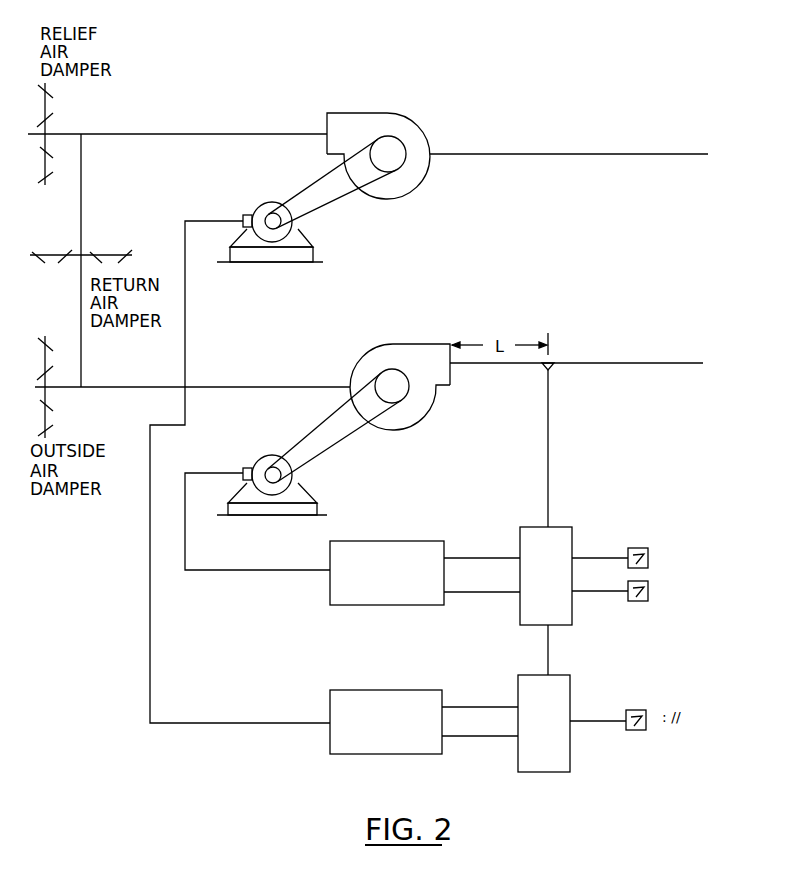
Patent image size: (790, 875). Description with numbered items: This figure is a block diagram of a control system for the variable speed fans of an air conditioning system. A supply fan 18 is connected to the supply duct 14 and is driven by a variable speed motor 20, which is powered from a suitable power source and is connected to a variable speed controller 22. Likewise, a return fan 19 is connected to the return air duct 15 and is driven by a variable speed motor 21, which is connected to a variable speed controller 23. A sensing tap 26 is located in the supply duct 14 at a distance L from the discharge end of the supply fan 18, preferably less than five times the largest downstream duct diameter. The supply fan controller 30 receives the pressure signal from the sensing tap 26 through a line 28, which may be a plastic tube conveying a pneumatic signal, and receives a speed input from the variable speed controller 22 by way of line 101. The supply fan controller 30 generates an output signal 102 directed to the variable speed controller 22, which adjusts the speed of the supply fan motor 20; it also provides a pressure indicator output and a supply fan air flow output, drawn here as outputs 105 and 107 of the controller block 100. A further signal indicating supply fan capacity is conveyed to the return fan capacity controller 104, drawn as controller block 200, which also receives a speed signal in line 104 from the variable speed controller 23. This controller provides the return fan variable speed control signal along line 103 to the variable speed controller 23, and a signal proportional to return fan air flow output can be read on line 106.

The supply duct 14 is at (663, 363).
The return air duct 15 is at (677, 154).
The supply fan 18 is at (353, 363).
The return fan 19 is at (427, 136).
The variable speed motor 20 is at (258, 461).
The variable speed motor 21 is at (256, 208).
The variable speed controller 22 is at (330, 598).
The variable speed controller 23 is at (330, 745).
The sensing tap 26 is at (551, 366).
The line 28 is at (548, 460).
The supply fan controller 30 is at (546, 576).
The controller 100 is at (566, 625).
The line 101 is at (473, 593).
The output signal 102 is at (481, 557).
The line 103 is at (480, 706).
The return fan capacity controller 104 is at (472, 737).
The controller output 105 is at (607, 583).
The line 106 is at (598, 718).
The controller output 107 is at (600, 555).
The controller 200 is at (599, 726).